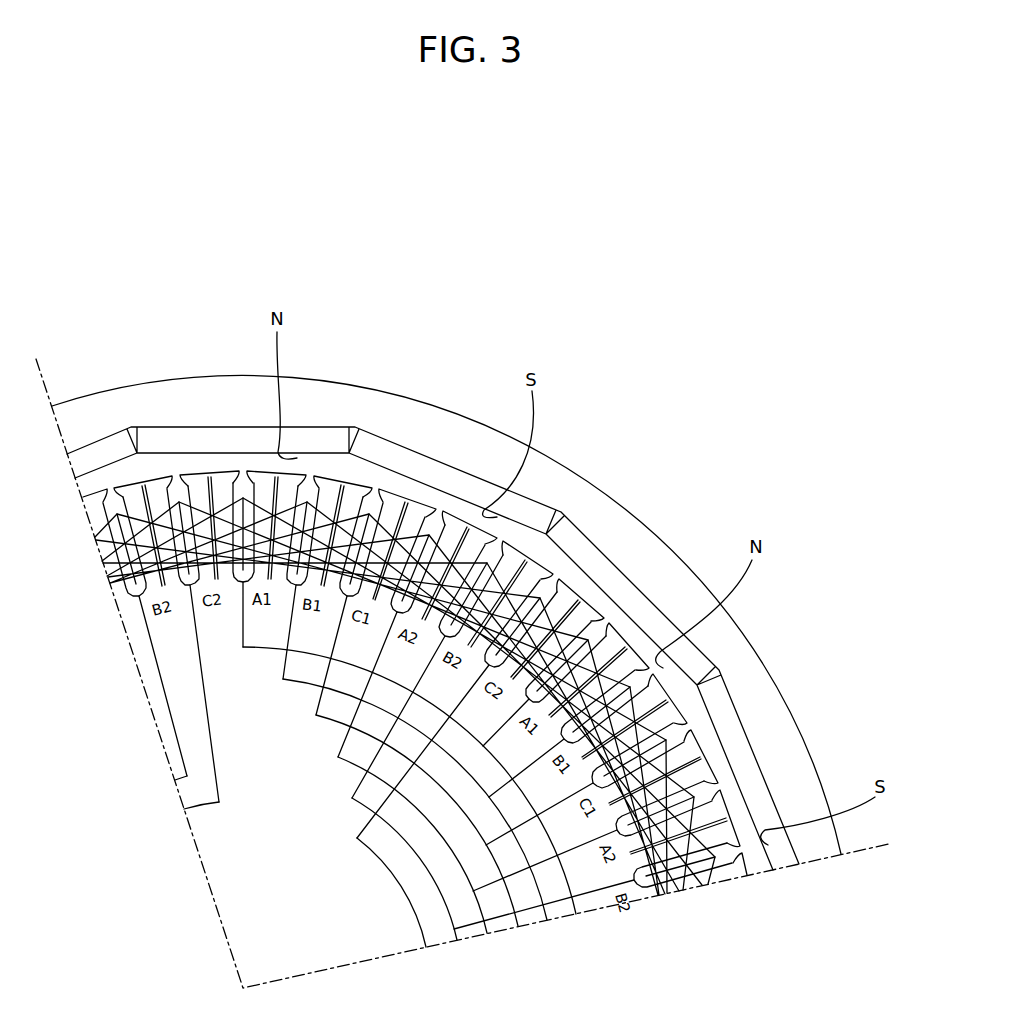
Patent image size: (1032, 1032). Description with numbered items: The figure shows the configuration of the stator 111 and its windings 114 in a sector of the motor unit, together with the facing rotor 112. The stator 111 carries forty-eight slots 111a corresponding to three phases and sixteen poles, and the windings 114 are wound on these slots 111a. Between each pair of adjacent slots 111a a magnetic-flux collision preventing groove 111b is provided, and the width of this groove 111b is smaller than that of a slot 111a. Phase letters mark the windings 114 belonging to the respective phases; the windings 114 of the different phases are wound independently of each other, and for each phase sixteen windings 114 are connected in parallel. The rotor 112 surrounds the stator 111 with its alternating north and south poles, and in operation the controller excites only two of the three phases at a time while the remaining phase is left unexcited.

The stator 111 is at (127, 490).
The slot 111a is at (175, 490).
The magnetic-flux collision preventing groove 111b is at (210, 490).
The rotor 112 is at (410, 396).
The winding 114 is at (320, 488).